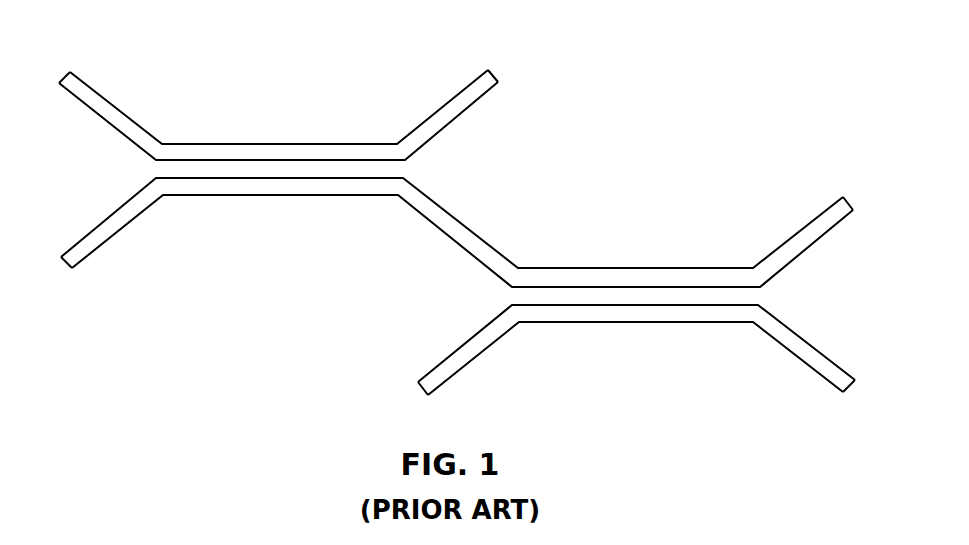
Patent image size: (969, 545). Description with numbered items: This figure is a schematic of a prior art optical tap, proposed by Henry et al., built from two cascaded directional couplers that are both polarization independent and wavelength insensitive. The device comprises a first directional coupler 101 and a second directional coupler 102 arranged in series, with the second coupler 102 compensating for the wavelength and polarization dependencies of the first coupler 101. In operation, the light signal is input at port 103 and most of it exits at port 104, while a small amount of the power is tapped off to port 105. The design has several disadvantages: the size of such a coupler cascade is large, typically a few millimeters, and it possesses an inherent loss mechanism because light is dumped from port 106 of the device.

The first directional coupler 101 is at (285, 143).
The second directional coupler 102 is at (632, 322).
The input port 103 is at (70, 72).
The output port 104 is at (488, 70).
The tap port 105 is at (845, 393).
The dump port 106 is at (843, 197).